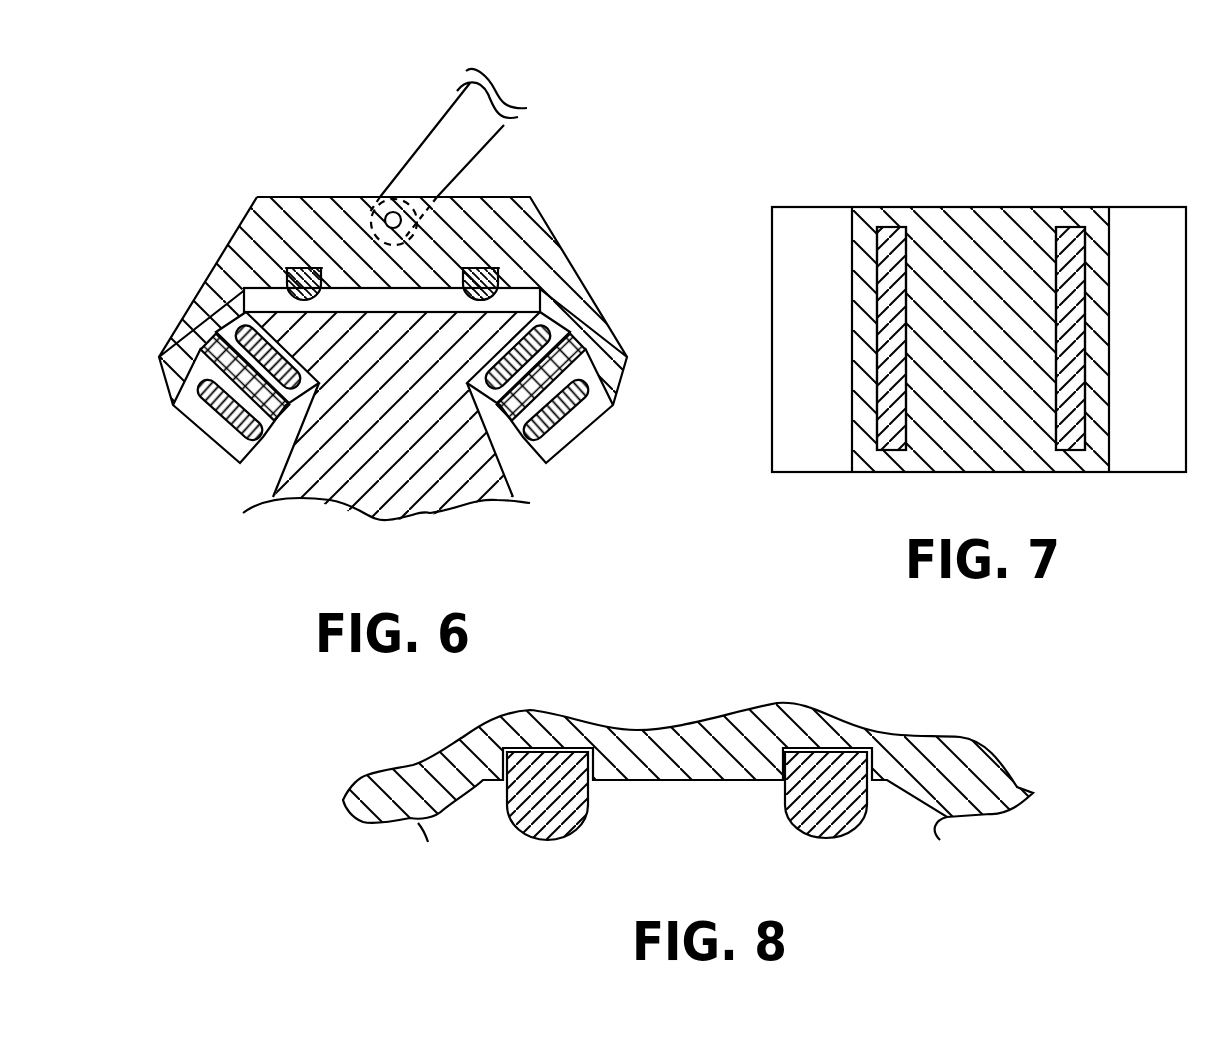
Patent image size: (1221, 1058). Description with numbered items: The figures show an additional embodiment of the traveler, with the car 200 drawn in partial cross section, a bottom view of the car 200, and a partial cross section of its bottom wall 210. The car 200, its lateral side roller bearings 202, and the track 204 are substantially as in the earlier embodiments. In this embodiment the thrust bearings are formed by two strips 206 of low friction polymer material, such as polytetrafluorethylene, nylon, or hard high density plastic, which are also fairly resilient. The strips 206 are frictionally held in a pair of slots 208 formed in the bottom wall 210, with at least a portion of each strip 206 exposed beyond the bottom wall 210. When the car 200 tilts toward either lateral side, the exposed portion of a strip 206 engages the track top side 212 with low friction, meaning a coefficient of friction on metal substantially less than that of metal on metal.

In FIG. 6, the car 200 is at (192, 304).
In FIG. 6, the lateral side roller bearings 202 is at (266, 440).
In FIG. 6, the track 204 is at (347, 494).
In FIG. 6, the strips 206 is at (282, 293).
In FIG. 7, the strips 206 is at (908, 240).
In FIG. 8, the strips 206 is at (572, 835).
In FIG. 6, the slots 208 is at (303, 272).
In FIG. 8, the slots 208 is at (570, 748).
In FIG. 6, the bottom wall 210 is at (400, 323).
In FIG. 7, the bottom wall 210 is at (953, 417).
In FIG. 8, the bottom wall 210 is at (730, 780).
In FIG. 6, the track top side 212 is at (400, 323).